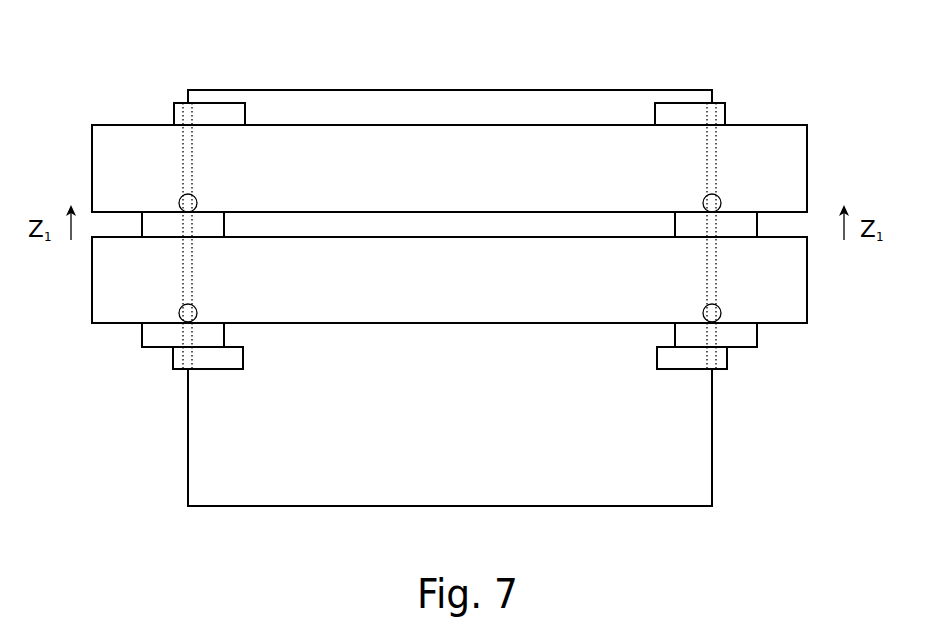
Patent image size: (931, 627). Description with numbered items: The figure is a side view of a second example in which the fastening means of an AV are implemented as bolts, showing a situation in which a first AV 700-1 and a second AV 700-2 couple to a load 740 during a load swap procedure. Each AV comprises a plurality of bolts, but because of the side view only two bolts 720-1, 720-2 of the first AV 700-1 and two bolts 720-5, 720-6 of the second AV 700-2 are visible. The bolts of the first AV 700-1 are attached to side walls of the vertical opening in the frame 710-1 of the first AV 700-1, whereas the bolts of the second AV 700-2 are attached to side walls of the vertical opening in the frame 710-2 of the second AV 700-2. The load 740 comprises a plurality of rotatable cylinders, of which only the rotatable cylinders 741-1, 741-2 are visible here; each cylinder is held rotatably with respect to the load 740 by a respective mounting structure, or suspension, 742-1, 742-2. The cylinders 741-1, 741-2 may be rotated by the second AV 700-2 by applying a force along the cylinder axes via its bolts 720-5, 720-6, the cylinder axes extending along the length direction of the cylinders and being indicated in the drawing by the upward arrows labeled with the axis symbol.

The load 740 is at (412, 90).
The first AV 700-1 is at (768, 123).
The frame of the first AV 710-1 is at (808, 150).
The bolt 720-1 is at (196, 197).
The bolt 720-2 is at (720, 197).
The second AV 700-2 is at (808, 265).
The frame of the second AV 710-2 is at (808, 302).
The bolt 720-5 is at (720, 307).
The bolt 720-6 is at (196, 307).
The rotatable cylinder 741-1 is at (758, 335).
The rotatable cylinder 741-2 is at (142, 336).
The mounting structure 742-1 is at (718, 370).
The mounting structure 742-2 is at (177, 368).